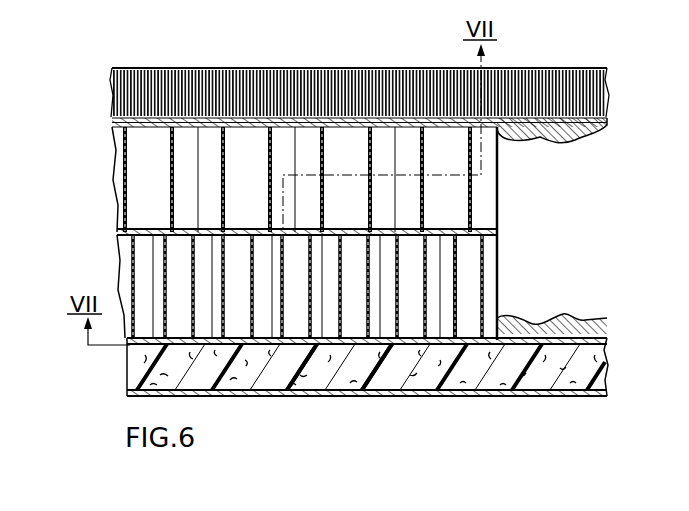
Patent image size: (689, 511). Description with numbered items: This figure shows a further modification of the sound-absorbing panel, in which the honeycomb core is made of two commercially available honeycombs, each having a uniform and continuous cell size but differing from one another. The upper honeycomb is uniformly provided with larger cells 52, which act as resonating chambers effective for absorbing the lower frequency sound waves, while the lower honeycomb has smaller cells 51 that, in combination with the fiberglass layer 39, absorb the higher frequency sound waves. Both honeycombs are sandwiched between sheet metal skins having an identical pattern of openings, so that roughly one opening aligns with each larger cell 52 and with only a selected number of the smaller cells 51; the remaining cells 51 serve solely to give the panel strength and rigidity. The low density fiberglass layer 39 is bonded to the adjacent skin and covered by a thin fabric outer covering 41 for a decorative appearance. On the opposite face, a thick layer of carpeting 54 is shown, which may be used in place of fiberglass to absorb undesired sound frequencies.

The layer of carpeting 54 is at (178, 78).
The cells 52 is at (170, 157).
The cells 51 is at (478, 282).
The outer covering 41 is at (303, 395).
The fiberglass layer 39 is at (397, 395).